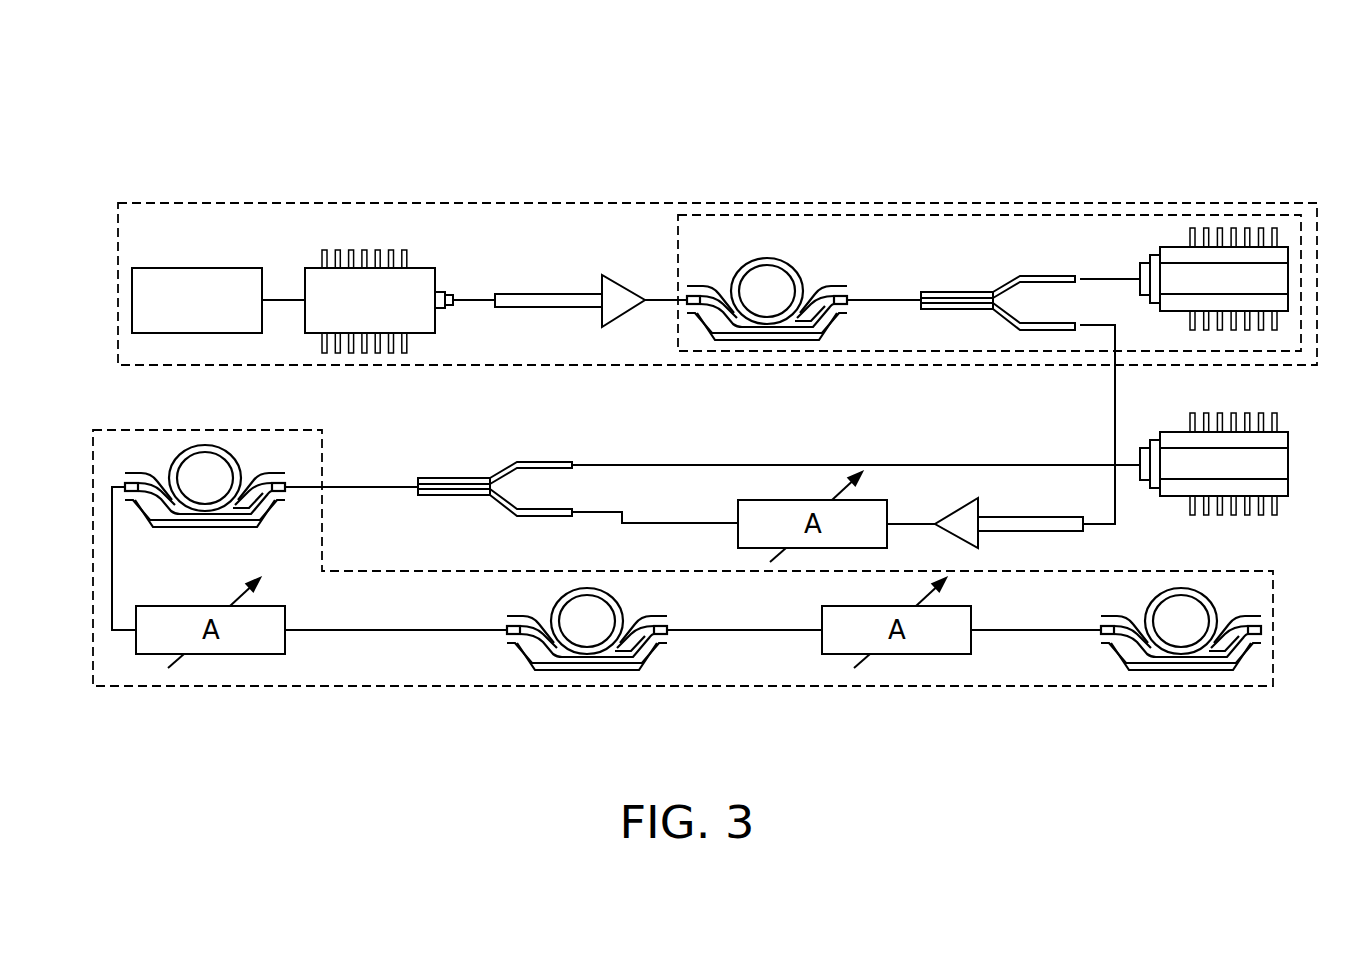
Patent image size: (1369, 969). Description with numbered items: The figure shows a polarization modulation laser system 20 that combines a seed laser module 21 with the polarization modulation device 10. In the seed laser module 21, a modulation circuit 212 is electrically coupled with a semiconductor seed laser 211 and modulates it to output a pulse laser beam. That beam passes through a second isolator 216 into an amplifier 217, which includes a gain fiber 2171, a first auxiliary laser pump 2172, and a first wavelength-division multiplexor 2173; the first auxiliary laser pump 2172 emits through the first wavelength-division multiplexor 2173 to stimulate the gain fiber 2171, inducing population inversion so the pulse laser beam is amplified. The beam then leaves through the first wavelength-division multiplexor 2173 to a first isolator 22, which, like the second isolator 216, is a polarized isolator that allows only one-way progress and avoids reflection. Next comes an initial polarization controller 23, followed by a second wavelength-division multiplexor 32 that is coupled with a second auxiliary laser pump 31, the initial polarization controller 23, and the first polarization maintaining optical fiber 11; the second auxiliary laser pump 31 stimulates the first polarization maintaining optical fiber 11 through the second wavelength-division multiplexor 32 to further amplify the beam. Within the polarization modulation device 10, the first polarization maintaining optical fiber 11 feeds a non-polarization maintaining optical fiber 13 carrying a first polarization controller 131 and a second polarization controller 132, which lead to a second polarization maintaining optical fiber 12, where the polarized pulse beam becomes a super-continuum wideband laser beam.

The polarization modulation laser system 20 is at (152, 66).
The seed laser module 21 is at (594, 203).
The semiconductor seed laser 211 is at (415, 268).
The modulation circuit 212 is at (196, 268).
The second isolator 216 is at (517, 294).
The amplifier 217 is at (888, 215).
The gain fiber 2171 is at (770, 258).
The first auxiliary laser pump 2172 is at (1168, 247).
The first wavelength-division multiplexor 2173 is at (1038, 276).
The polarization modulation device 10 is at (788, 686).
The first polarization maintaining optical fiber 11 is at (205, 444).
The second polarization maintaining optical fiber 12 is at (1180, 672).
The non-polarization maintaining optical fiber 13 is at (587, 670).
The first polarization controller 131 is at (228, 654).
The second polarization controller 132 is at (935, 654).
The first isolator 22 is at (1083, 531).
The initial polarization controller 23 is at (734, 533).
The second auxiliary laser pump 31 is at (1288, 463).
The second wavelength-division multiplexor 32 is at (455, 478).